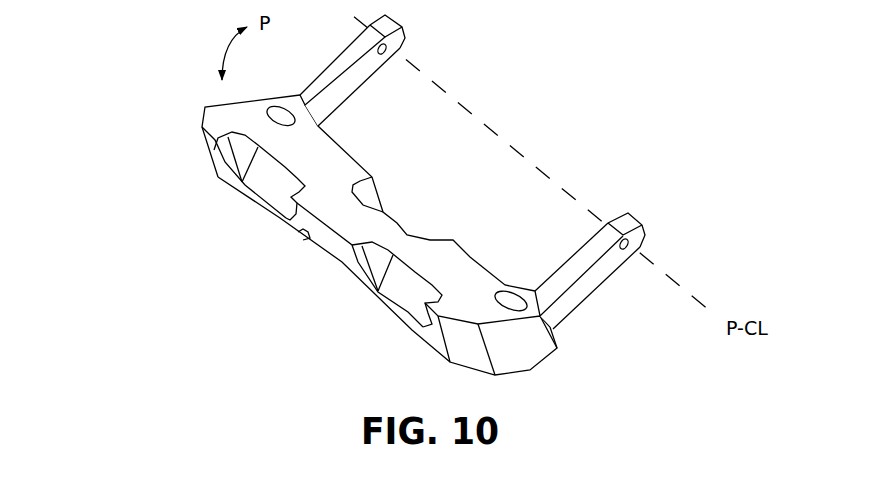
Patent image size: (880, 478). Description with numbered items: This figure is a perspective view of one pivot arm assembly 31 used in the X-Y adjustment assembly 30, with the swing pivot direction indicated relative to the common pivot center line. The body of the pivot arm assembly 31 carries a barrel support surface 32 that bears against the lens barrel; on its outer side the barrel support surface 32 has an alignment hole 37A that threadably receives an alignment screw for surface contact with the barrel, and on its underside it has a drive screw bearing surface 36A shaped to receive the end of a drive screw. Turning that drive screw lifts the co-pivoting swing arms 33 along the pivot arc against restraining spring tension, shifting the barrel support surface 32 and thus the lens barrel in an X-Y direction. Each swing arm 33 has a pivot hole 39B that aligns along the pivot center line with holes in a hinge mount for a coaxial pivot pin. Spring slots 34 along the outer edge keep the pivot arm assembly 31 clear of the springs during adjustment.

The X-Y adjustment assembly 30 is at (186, 46).
The pivot arm assembly 31 is at (457, 220).
The barrel support surface 32 is at (542, 322).
The swing arm 33 is at (340, 94).
The spring slot 34 is at (402, 288).
The drive screw bearing surface 36A is at (403, 226).
The alignment hole 37A is at (292, 123).
The pivot hole 39B is at (402, 48).